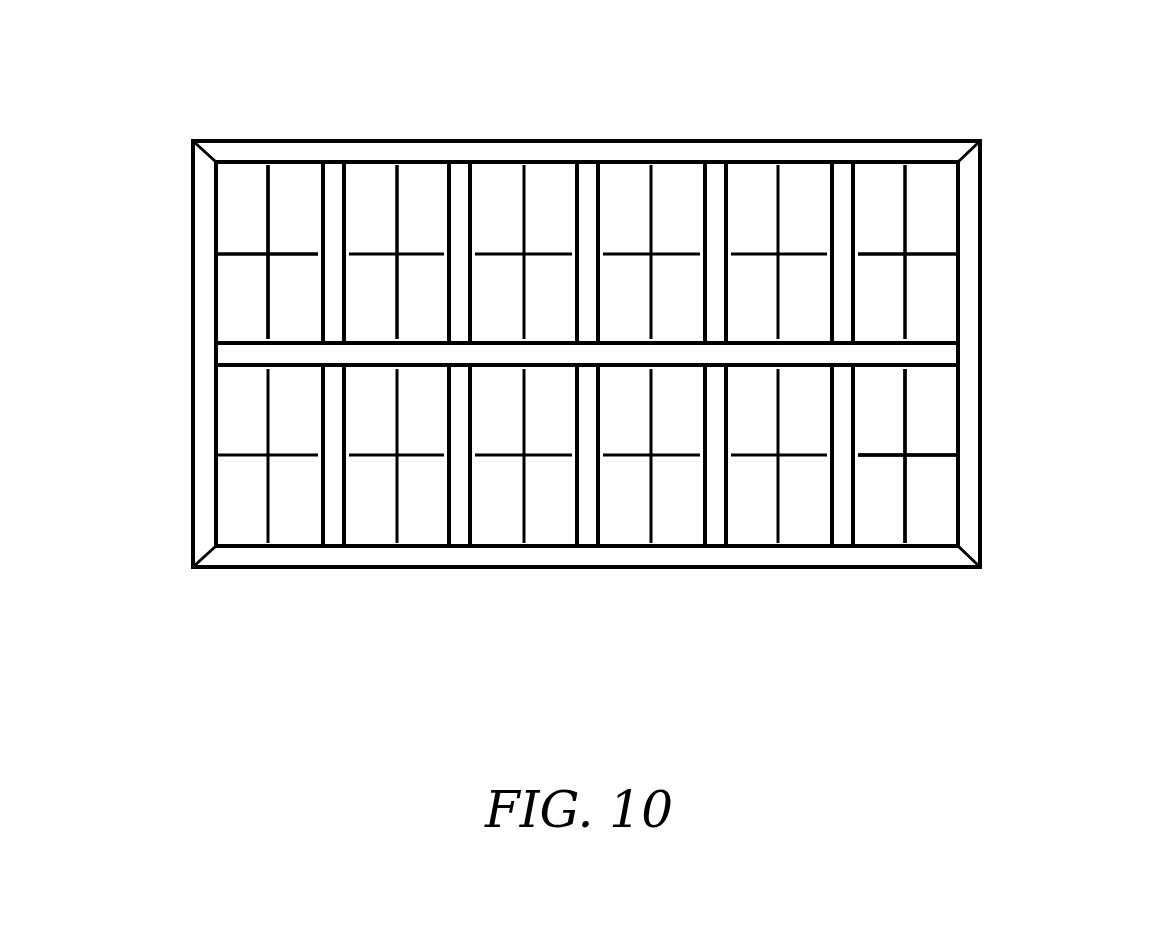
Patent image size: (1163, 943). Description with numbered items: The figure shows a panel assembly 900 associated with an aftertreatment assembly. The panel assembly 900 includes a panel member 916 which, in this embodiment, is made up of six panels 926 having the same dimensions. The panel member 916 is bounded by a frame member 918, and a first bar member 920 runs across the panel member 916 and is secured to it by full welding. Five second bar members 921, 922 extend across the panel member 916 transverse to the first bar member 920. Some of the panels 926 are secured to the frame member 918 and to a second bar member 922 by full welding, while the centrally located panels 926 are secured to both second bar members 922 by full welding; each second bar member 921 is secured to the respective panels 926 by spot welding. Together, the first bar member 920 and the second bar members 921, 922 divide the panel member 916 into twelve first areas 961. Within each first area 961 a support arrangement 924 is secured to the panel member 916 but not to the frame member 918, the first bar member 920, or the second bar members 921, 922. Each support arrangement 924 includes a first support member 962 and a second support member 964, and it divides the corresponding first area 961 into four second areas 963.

The panel assembly 900 is at (602, 365).
The frame member 918 is at (998, 212).
The first bar member 920 is at (942, 358).
The second bar member 921 is at (333, 172).
The second bar member 922 is at (461, 175).
The support arrangement 924 is at (258, 304).
The panel 926 is at (298, 515).
The panel member 916 is at (875, 508).
The first area 961 is at (930, 303).
The first support member 962 is at (240, 254).
The second area 963 is at (303, 192).
The second support member 964 is at (268, 210).